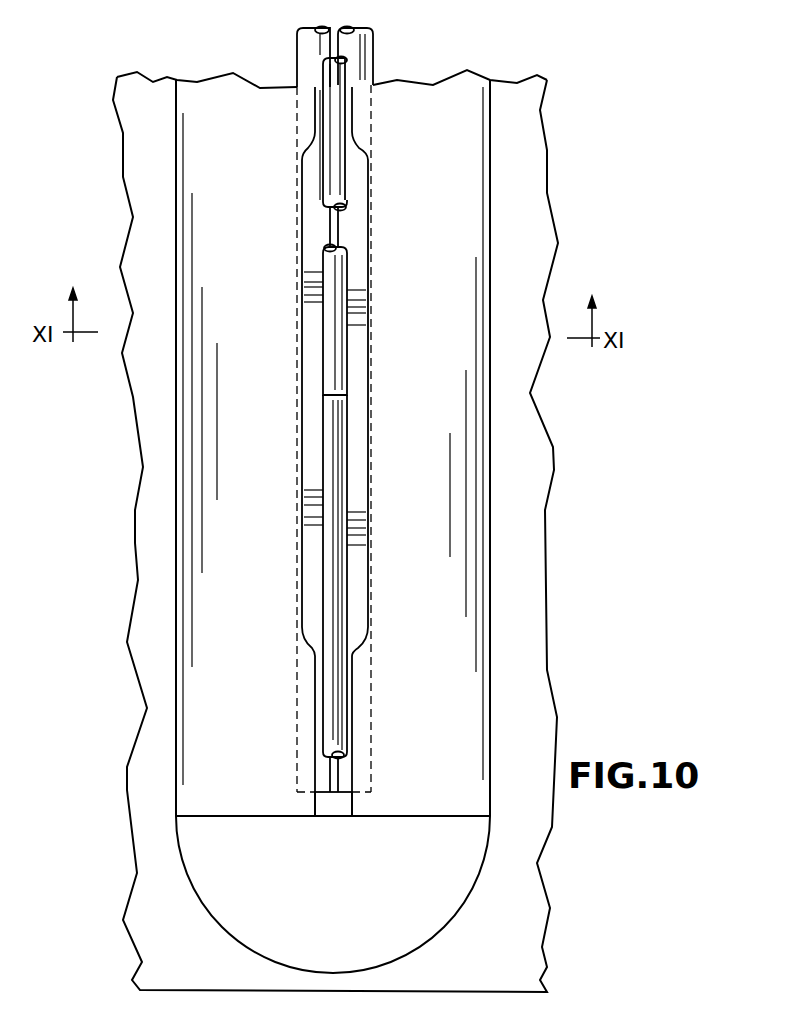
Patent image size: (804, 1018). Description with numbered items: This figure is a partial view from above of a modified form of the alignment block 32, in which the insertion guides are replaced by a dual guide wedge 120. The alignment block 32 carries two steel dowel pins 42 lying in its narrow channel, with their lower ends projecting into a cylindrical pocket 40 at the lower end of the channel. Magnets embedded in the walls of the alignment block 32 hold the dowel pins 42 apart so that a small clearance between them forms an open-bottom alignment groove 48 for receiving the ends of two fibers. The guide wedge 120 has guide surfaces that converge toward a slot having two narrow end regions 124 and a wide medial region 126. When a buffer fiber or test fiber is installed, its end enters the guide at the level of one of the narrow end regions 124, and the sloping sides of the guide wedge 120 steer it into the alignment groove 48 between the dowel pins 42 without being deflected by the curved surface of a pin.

The dual guide wedge 120 is at (197, 72).
The steel dowel pins 42 is at (297, 40).
The narrow end regions 124 is at (352, 112).
The wide medial region 126 is at (358, 165).
The alignment groove 48 is at (335, 228).
The alignment block 32 is at (535, 455).
The cylindrical pocket 40 is at (238, 920).